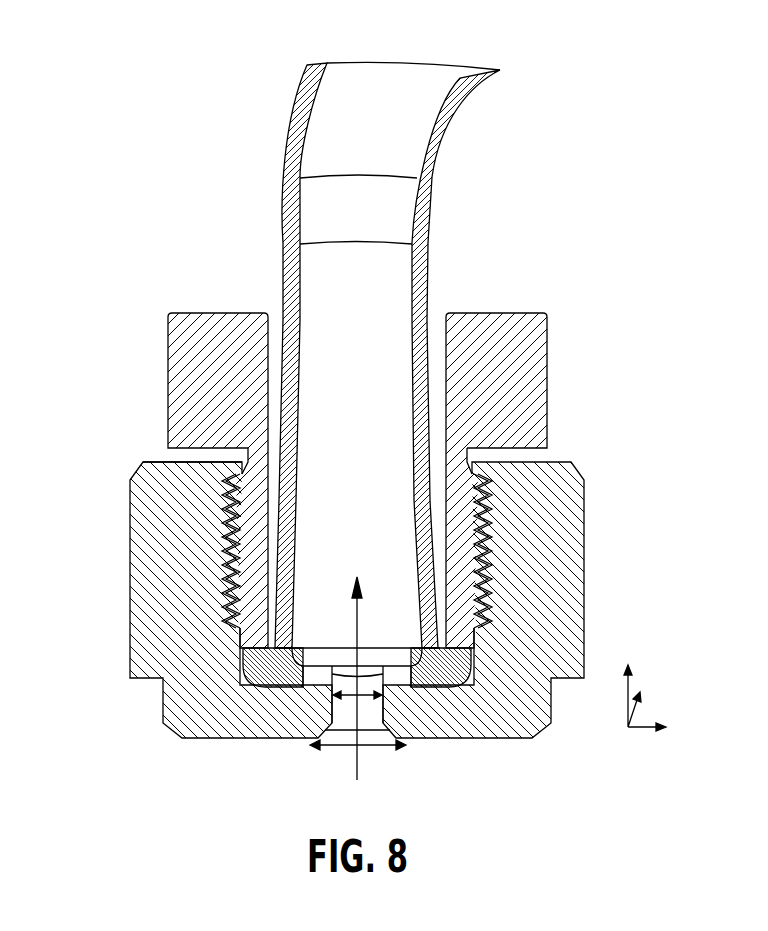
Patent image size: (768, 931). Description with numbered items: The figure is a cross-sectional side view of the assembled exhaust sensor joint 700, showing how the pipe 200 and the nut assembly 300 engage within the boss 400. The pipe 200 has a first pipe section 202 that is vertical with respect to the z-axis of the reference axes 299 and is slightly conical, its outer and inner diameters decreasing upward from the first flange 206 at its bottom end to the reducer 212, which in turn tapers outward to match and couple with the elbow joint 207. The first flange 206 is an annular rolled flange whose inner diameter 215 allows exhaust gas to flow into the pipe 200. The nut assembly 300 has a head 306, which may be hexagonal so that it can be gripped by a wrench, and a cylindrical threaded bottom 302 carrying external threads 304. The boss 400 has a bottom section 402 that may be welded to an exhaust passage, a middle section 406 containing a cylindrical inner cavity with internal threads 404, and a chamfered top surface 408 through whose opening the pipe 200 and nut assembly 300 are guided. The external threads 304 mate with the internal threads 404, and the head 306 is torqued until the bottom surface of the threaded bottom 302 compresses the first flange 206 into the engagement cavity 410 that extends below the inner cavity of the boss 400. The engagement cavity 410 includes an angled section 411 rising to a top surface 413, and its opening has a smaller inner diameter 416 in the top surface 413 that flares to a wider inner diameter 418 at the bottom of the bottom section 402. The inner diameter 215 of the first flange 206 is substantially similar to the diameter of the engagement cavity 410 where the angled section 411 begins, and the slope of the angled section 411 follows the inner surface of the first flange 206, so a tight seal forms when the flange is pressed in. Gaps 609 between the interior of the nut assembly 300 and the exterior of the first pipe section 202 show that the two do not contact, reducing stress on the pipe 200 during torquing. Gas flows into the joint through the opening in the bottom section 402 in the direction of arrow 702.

The pipe 200 is at (286, 434).
The first pipe section 202 is at (432, 275).
The first flange 206 is at (305, 667).
The elbow joint 207 is at (490, 85).
The reducer 212 is at (290, 207).
The inner diameter 215 is at (310, 672).
The reference axes 299 is at (678, 661).
The nut assembly 300 is at (393, 451).
The threaded bottom 302 is at (482, 565).
The external threads 304 is at (485, 503).
The head 306 is at (547, 362).
The boss 400 is at (337, 597).
The bottom section 402 is at (227, 740).
The internal threads 404 is at (227, 507).
The middle section 406 is at (130, 610).
The top surface 408 is at (187, 458).
The engagement cavity 410 is at (467, 677).
The angled section 411 is at (443, 682).
The top surface 413 is at (271, 683).
The inner diameter 416 is at (362, 698).
The inner diameter 418 is at (368, 752).
The gaps 609 is at (279, 307).
The exhaust sensor joint 700 is at (638, 84).
The arrow 702 is at (353, 765).